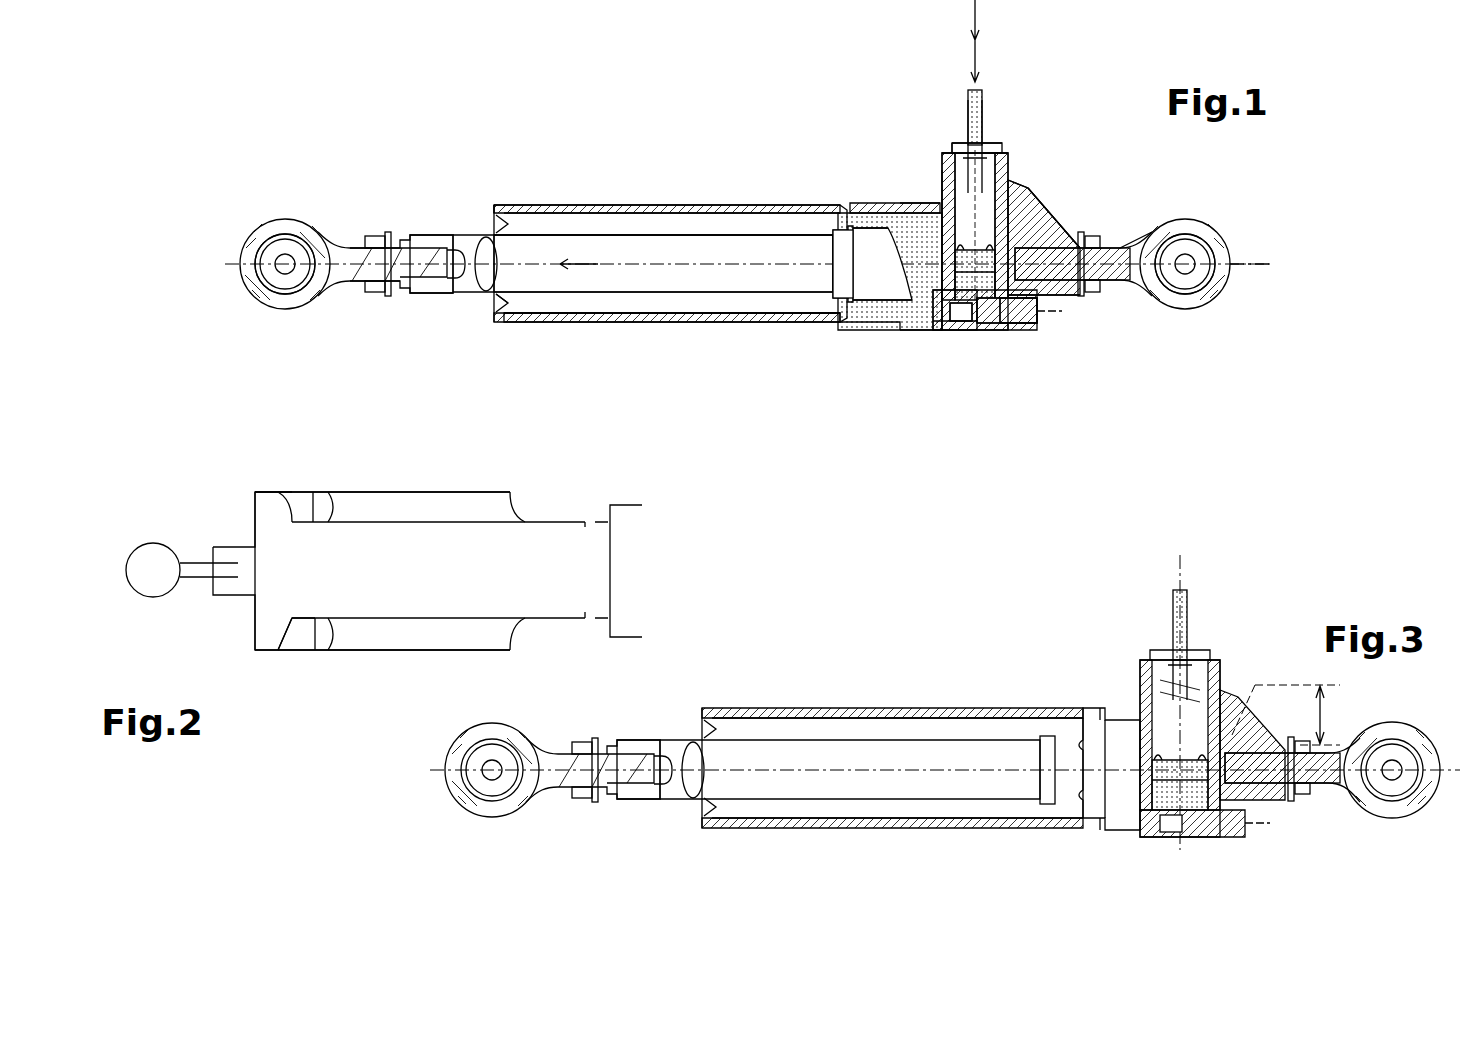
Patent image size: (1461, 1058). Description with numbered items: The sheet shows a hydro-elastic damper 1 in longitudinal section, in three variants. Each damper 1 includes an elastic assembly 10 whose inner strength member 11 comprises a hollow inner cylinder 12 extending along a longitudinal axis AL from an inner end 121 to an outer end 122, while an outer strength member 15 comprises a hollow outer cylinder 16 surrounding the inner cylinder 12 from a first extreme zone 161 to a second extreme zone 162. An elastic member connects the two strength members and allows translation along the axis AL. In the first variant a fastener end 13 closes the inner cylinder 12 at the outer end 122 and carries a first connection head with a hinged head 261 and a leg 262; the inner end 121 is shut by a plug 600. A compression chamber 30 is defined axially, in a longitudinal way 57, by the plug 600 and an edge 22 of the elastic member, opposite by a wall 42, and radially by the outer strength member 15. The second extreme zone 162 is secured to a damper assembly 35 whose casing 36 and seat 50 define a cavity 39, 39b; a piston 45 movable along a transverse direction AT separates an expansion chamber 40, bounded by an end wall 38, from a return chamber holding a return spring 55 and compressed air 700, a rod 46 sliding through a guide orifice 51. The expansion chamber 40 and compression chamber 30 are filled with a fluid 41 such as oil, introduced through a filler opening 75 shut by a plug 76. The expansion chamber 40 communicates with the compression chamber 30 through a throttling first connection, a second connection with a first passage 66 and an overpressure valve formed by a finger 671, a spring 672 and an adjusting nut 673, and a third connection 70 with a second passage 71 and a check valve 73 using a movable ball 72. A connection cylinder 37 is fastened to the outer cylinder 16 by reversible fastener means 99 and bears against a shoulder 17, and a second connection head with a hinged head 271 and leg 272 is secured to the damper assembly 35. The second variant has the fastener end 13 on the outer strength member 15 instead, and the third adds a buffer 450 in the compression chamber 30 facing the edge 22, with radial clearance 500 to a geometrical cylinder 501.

In FIG. 1, the hydro-elastic damper 1 is at (436, 127).
In FIG. 1, the elastic assembly 10 is at (535, 330).
In FIG. 1, the inner strength member 11 is at (660, 234).
In FIG. 3, the inner strength member 11 is at (900, 770).
In FIG. 1, the inner cylinder 12 is at (718, 245).
In FIG. 3, the inner cylinder 12 is at (920, 760).
In FIG. 1, the fastener end 13 is at (440, 232).
In FIG. 2, the fastener end 13 is at (240, 530).
In FIG. 1, the outer strength member 15 is at (628, 185).
In FIG. 2, the outer strength member 15 is at (368, 652).
In FIG. 3, the outer strength member 15 is at (940, 830).
In FIG. 1, the outer cylinder 16 is at (565, 203).
In FIG. 1, the shoulder 17 is at (900, 340).
In FIG. 1, the edge 22 is at (745, 232).
In FIG. 1, the compression chamber 30 is at (795, 300).
In FIG. 2, the compression chamber 30 is at (552, 590).
In FIG. 3, the compression chamber 30 is at (1105, 748).
In FIG. 1, the damper assembly 35 is at (1072, 148).
In FIG. 1, the casing 36 is at (1088, 235).
In FIG. 2, the casing 36 is at (625, 575).
In FIG. 1, the connection cylinder 37 is at (925, 335).
In FIG. 1, the end wall 38 is at (1000, 335).
In FIG. 1, the cavity 39 is at (955, 160).
In FIG. 1, the cavity 39b is at (1040, 300).
In FIG. 1, the expansion chamber 40 is at (1008, 192).
In FIG. 1, the fluid 41 is at (858, 280).
In FIG. 1, the wall 42 is at (935, 200).
In FIG. 1, the piston 45 is at (1000, 160).
In FIG. 1, the rod 46 is at (990, 150).
In FIG. 1, the seat 50 is at (950, 160).
In FIG. 1, the guide orifice 51 is at (965, 150).
In FIG. 3, the return spring 55 is at (1200, 660).
In FIG. 1, the longitudinal way 57 is at (590, 264).
In FIG. 1, the first passage 66 is at (935, 335).
In FIG. 1, the third connection 70 is at (871, 238).
In FIG. 1, the second passage 71 is at (1048, 232).
In FIG. 1, the movable ball 72 is at (975, 236).
In FIG. 1, the check valve 73 is at (1010, 335).
In FIG. 1, the filler opening 75 is at (1045, 330).
In FIG. 1, the plug 76 is at (1040, 320).
In FIG. 1, the reversible fastener means 99 is at (905, 203).
In FIG. 1, the inner end 121 is at (818, 250).
In FIG. 2, the inner end 121 is at (585, 520).
In FIG. 1, the outer end 122 is at (488, 296).
In FIG. 2, the outer end 122 is at (328, 524).
In FIG. 1, the first extreme zone 161 is at (497, 204).
In FIG. 2, the first extreme zone 161 is at (280, 490).
In FIG. 1, the second extreme zone 162 is at (840, 300).
In FIG. 2, the second extreme zone 162 is at (510, 490).
In FIG. 1, the hinged head 261 is at (285, 213).
In FIG. 1, the leg 262 is at (360, 276).
In FIG. 1, the hinged head 271 is at (1232, 232).
In FIG. 1, the leg 272 is at (1125, 240).
In FIG. 2, the buffer 450 is at (300, 645).
In FIG. 3, the buffer 450 is at (1075, 718).
In FIG. 3, the radial clearance 500 is at (1304, 715).
In FIG. 3, the geometrical cylinder 501 is at (1100, 835).
In FIG. 1, the plug 600 is at (735, 313).
In FIG. 3, the plug 600 is at (1060, 830).
In FIG. 1, the finger 671 is at (945, 335).
In FIG. 1, the spring 672 is at (975, 335).
In FIG. 1, the nut 673 is at (1037, 305).
In FIG. 1, the compressed air 700 is at (1003, 150).
In FIG. 1, the transverse direction AT is at (985, 12).
In FIG. 1, the longitudinal axis AL is at (1250, 270).